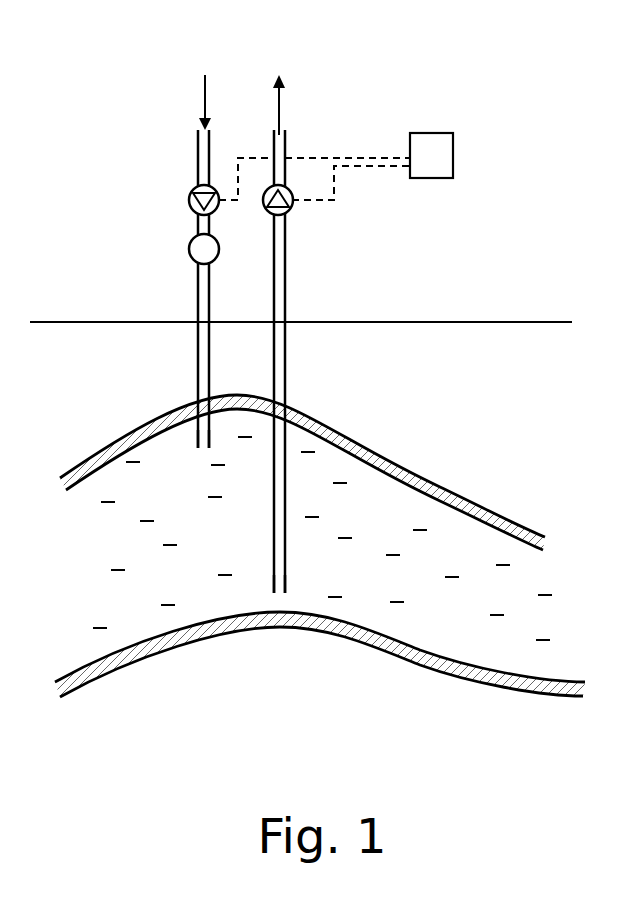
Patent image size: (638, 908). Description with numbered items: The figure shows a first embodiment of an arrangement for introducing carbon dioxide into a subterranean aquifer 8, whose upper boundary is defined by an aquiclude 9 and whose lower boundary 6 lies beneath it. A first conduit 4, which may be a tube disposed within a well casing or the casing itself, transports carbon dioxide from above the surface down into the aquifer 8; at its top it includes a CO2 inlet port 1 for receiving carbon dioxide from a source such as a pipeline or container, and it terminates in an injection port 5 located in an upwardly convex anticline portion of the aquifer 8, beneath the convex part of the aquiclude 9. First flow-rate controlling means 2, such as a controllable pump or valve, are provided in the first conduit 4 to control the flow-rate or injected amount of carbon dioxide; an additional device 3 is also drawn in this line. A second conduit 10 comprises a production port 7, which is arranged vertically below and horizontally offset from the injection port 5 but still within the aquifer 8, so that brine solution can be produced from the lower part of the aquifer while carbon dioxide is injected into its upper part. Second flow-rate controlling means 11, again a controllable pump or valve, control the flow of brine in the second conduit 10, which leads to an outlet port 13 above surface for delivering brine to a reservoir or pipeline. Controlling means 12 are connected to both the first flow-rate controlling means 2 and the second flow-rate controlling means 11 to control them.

The CO2 inlet port 1 is at (203, 128).
The first flow-rate controlling means 2 is at (193, 192).
The CO2 flow meter / measuring device 3 is at (193, 242).
The first conduit 4 is at (197, 333).
The injection port 5 is at (202, 450).
The lower boundary 6 is at (110, 667).
The production port 7 is at (277, 600).
The aquifer 8 is at (322, 538).
The aquiclude 9 is at (440, 500).
The second conduit 10 is at (287, 332).
The second flow-rate controlling means 11 is at (290, 210).
The controlling means 12 is at (455, 162).
The outlet port 13 is at (285, 136).